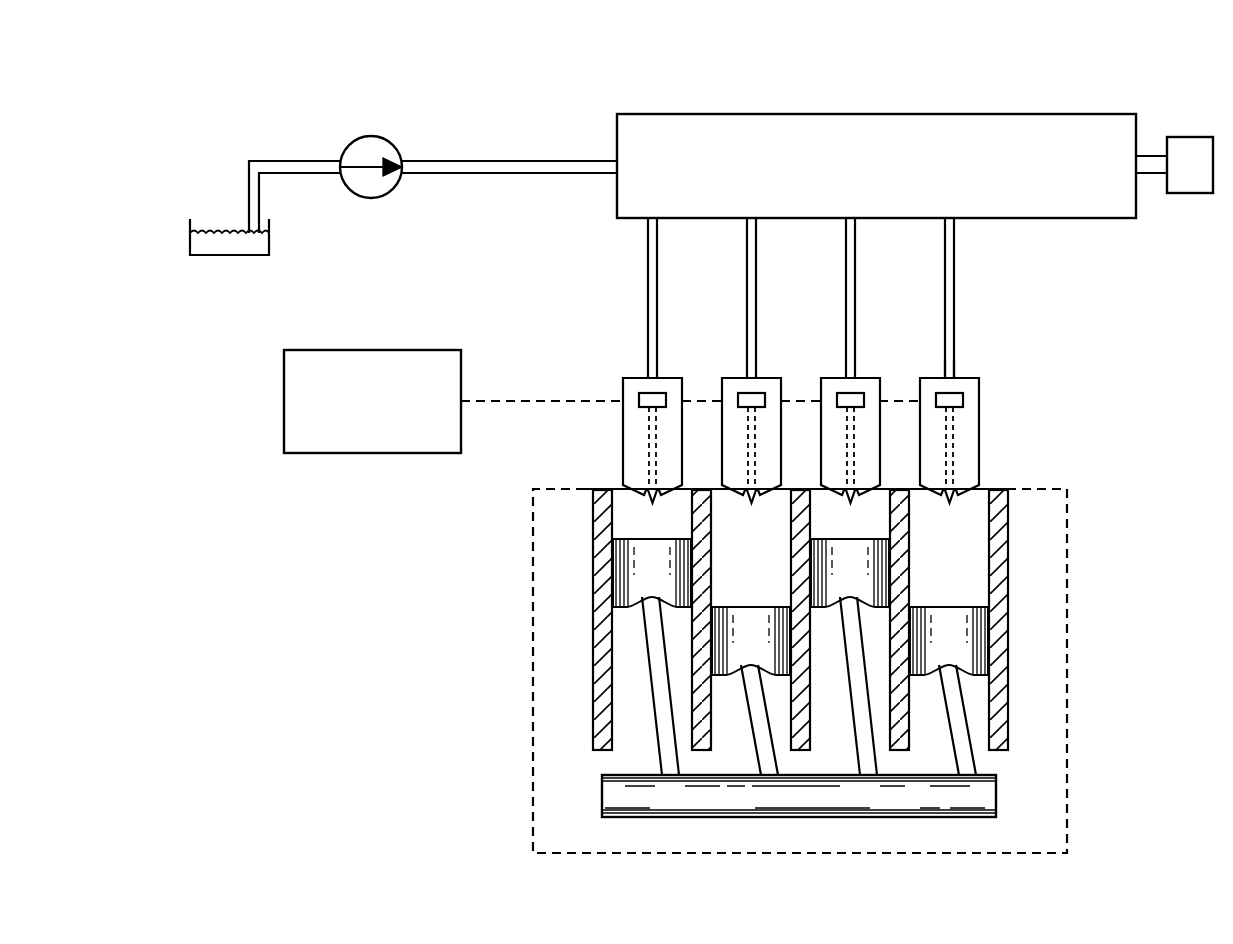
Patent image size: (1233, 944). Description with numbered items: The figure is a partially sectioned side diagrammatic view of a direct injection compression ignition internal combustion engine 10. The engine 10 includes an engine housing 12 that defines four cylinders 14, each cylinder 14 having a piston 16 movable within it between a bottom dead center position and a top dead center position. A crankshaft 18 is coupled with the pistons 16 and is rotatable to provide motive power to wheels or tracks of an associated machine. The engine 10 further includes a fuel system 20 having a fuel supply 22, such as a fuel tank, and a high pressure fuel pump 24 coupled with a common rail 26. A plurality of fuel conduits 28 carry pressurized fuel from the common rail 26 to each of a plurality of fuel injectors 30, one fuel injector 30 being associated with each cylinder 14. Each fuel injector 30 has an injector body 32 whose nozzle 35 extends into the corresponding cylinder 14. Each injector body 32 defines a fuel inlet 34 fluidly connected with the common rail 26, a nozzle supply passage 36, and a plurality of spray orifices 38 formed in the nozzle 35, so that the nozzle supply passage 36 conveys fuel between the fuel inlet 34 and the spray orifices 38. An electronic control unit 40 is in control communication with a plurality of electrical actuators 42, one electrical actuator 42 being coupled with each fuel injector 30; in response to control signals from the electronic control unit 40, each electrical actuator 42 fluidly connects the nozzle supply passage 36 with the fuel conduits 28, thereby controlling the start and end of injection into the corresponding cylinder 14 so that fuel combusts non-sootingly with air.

The internal combustion engine 10 is at (418, 614).
The engine housing 12 is at (1067, 545).
The cylinder 14 is at (620, 517).
The piston 16 is at (968, 652).
The crankshaft 18 is at (998, 790).
The fuel system 20 is at (202, 180).
The fuel supply 22 is at (227, 257).
The high pressure fuel pump 24 is at (370, 135).
The common rail 26 is at (660, 113).
The fuel conduit 28 is at (952, 280).
The fuel injector 30 is at (633, 376).
The injector body 32 is at (958, 385).
The fuel inlet 34 is at (953, 375).
The nozzle 35 is at (947, 507).
The nozzle supply passage 36 is at (955, 438).
The spray orifices 38 is at (963, 497).
The electronic control unit 40 is at (370, 453).
The electrical actuator 42 is at (962, 408).